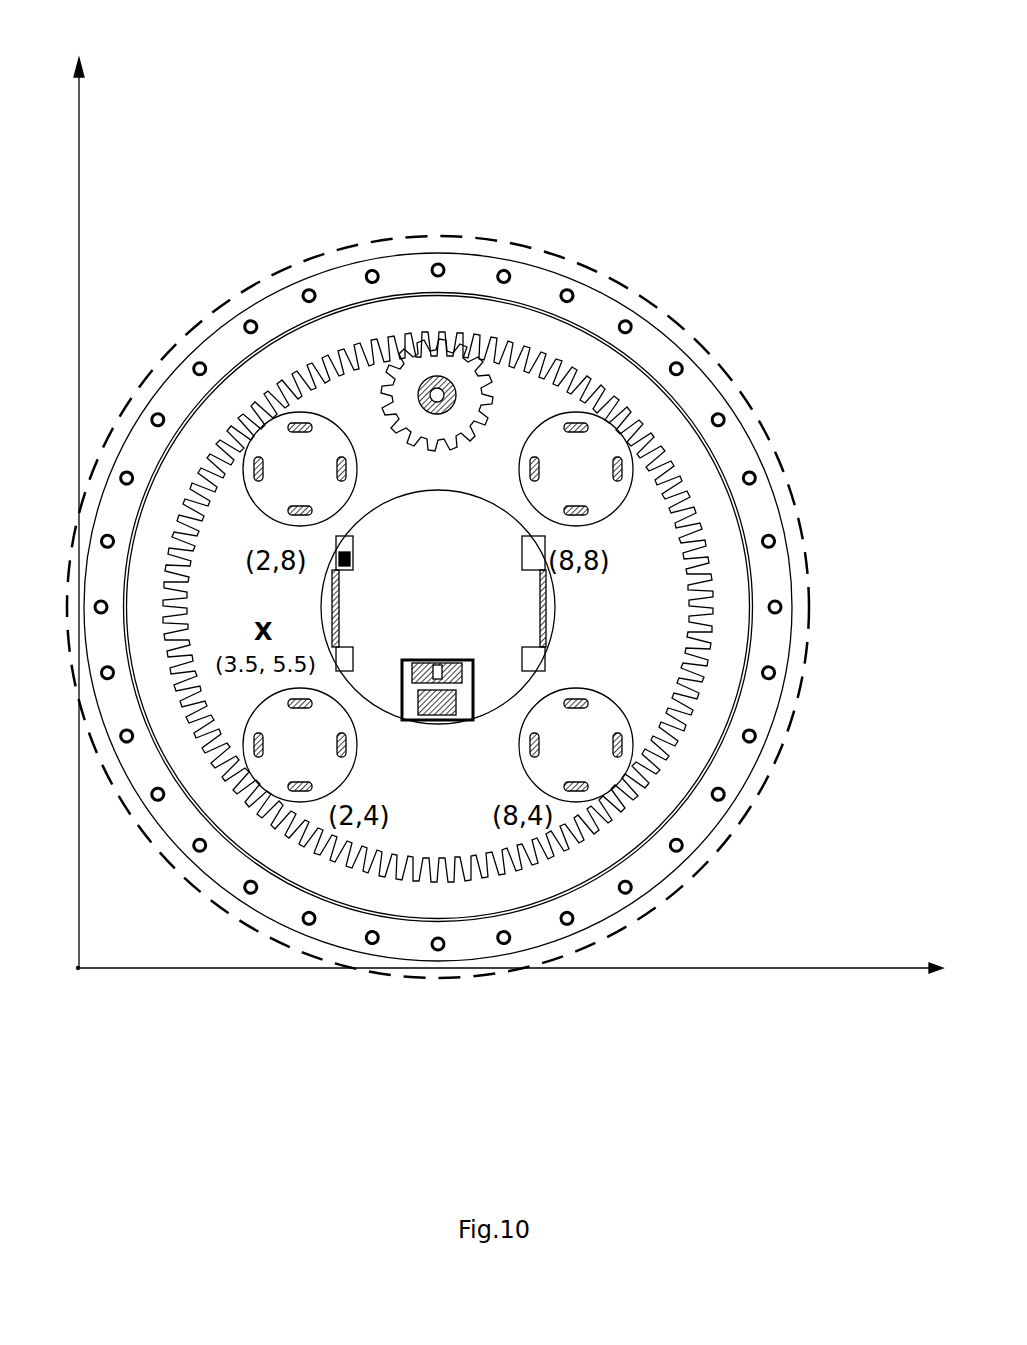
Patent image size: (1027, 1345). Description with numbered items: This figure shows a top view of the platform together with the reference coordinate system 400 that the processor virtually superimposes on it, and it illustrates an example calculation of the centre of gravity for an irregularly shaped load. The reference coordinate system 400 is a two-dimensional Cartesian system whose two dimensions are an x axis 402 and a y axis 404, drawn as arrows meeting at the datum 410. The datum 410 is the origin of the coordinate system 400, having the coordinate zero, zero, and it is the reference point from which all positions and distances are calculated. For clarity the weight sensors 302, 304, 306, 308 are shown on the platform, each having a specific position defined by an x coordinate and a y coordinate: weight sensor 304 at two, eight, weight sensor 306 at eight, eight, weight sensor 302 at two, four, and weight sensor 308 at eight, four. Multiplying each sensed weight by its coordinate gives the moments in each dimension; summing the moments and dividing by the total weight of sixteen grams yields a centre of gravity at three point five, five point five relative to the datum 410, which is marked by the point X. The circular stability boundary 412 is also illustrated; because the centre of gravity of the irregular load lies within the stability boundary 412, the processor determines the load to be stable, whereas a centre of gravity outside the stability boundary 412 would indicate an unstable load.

The weight sensor 302 is at (288, 753).
The weight sensor 304 is at (288, 448).
The weight sensor 306 is at (585, 448).
The weight sensor 308 is at (587, 753).
The reference coordinate system 400 is at (484, 588).
The x axis 402 is at (748, 968).
The y axis 404 is at (79, 147).
The datum 410 is at (78, 968).
The stability boundary 412 is at (763, 415).